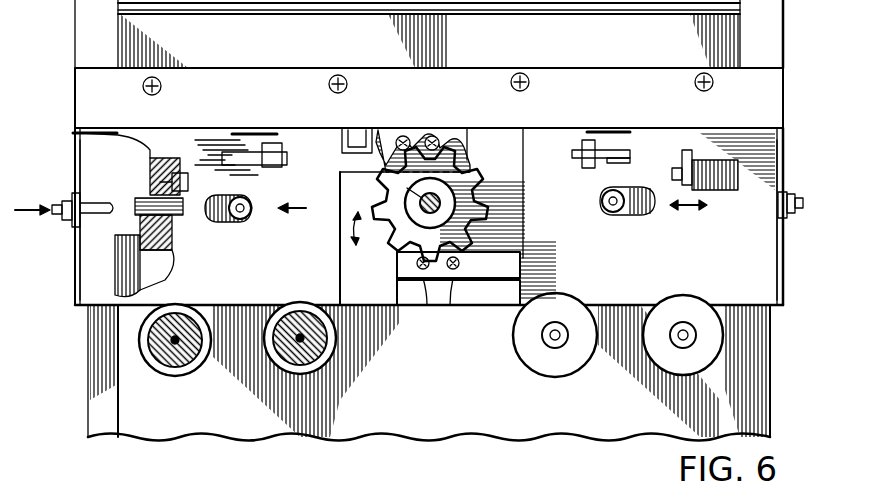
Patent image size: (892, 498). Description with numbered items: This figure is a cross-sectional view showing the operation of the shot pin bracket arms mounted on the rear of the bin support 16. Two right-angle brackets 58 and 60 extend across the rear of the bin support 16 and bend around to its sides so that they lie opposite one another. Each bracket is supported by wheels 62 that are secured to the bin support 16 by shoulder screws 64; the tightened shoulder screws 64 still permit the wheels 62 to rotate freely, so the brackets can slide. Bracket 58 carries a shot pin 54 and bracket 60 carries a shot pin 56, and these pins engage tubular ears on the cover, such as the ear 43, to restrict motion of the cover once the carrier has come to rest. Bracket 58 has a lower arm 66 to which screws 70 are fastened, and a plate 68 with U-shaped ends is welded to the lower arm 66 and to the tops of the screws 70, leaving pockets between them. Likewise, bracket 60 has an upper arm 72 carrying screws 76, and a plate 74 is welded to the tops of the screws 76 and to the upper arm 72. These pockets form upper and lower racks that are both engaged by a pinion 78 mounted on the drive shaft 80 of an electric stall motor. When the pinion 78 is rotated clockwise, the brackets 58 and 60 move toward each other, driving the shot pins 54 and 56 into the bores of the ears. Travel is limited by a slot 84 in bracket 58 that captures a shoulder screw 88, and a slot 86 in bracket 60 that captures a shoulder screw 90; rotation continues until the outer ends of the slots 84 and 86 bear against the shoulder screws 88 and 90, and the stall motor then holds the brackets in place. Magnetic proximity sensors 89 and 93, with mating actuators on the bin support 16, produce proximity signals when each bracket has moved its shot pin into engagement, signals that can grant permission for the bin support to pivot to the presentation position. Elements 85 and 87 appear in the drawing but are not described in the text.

The bin support 16 is at (430, 422).
The ear 43 is at (153, 230).
The shot pin 54 is at (806, 206).
The shot pin 56 is at (72, 193).
The bracket 58 is at (783, 262).
The bracket 60 is at (75, 266).
The wheel 62 is at (175, 388).
The shoulder screw 64 is at (545, 345).
The lower arm 66 is at (400, 290).
The plate 68 is at (535, 262).
The screw 70 is at (446, 280).
The upper arm 72 is at (381, 130).
The plate 74 is at (352, 125).
The screw 76 is at (434, 132).
The pinion 78 is at (500, 176).
The drive shaft 80 is at (340, 192).
The slot 84 is at (627, 220).
The bracket 85 is at (683, 150).
The slot 86 is at (238, 230).
The spring 87 is at (193, 150).
The shoulder screw 88 is at (606, 210).
The magnetic proximity sensor 89 is at (633, 160).
The shoulder screw 90 is at (242, 222).
The magnetic proximity sensor 93 is at (225, 150).